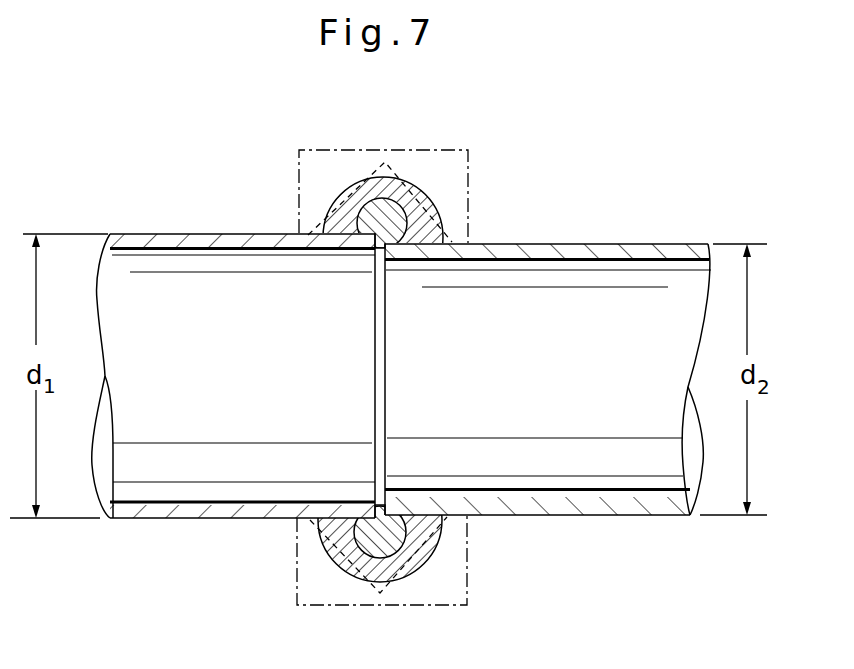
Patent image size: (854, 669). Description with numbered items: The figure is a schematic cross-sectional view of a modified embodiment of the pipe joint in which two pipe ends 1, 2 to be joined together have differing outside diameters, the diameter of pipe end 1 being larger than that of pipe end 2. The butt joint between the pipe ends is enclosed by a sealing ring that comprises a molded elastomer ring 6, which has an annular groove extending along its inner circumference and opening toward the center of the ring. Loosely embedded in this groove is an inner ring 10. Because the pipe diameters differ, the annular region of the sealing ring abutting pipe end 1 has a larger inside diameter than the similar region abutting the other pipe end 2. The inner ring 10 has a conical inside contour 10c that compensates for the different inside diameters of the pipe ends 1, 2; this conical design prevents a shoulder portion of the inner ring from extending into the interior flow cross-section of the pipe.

The pipe end 1 is at (135, 508).
The pipe end 2 is at (617, 503).
The molded elastomer ring 6 is at (440, 209).
The inner ring 10 is at (392, 216).
The conical inside contour 10c is at (375, 247).